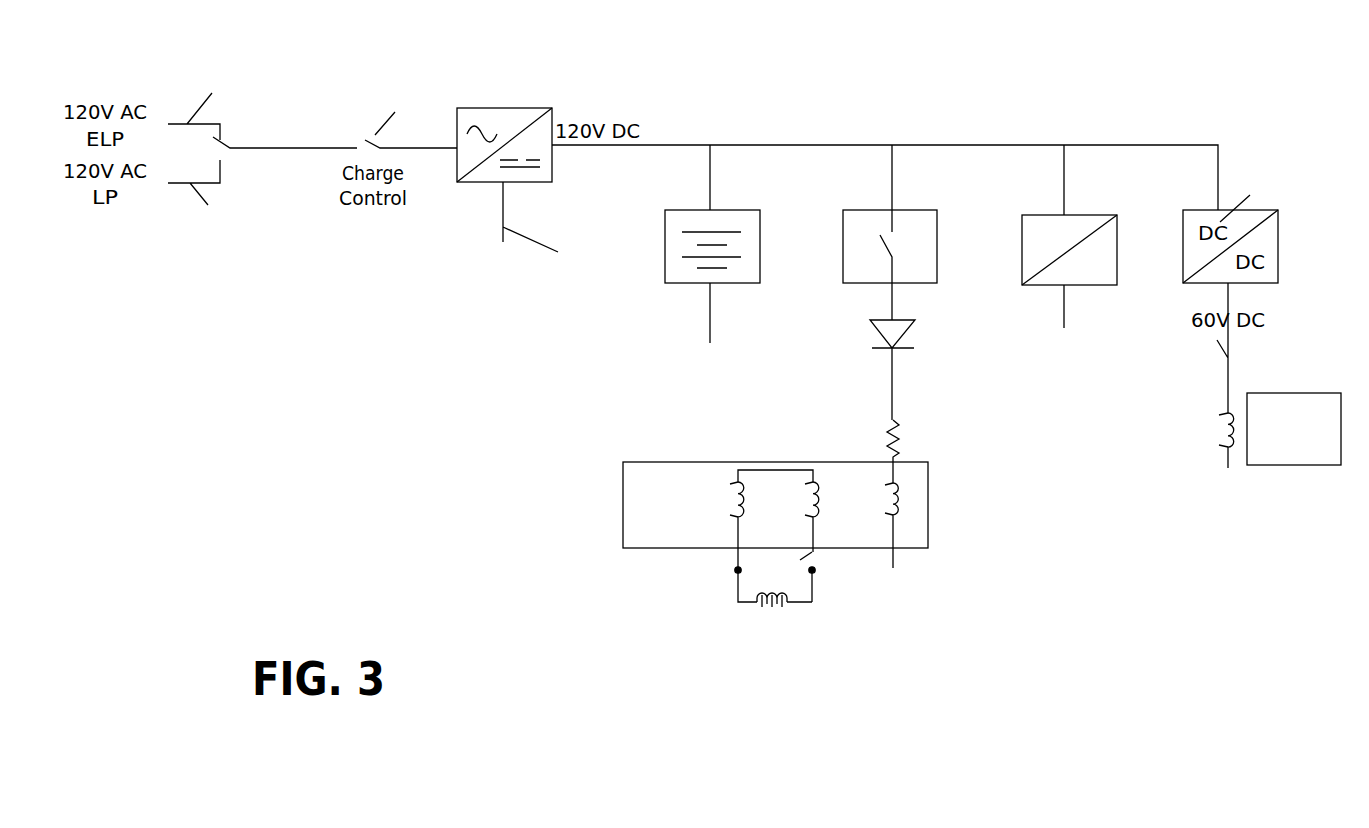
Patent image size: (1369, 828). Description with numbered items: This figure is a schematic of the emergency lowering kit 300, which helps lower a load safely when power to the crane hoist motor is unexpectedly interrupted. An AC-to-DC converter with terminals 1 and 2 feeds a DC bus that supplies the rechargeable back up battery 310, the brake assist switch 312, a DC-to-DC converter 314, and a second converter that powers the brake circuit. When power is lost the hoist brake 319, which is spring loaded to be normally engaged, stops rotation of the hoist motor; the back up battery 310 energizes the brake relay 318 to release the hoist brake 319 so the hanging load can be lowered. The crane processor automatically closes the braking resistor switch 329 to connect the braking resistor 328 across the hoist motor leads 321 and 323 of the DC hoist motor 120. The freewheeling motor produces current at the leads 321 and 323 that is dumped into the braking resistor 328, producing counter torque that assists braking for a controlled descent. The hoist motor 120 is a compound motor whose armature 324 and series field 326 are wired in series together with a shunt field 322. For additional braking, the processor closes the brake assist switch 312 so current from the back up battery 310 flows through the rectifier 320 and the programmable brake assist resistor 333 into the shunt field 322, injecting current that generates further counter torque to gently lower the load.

The emergency lowering kit 300 is at (702, 110).
The terminal 1 is at (527, 227).
The terminal 2 is at (710, 330).
The rechargeable back up battery 310 is at (748, 220).
The brake assist switch 312 is at (915, 227).
The DC/DC converter 314 is at (1068, 225).
The rectifier 320 is at (902, 327).
The brake assist resistor 333 is at (880, 440).
The brake relay 318 is at (1217, 438).
The hoist brake 319 is at (1262, 458).
The DC hoist motor 120 is at (635, 472).
The shunt field 322 is at (908, 495).
The armature coil 324 is at (728, 502).
The series field coil 326 is at (830, 507).
The hoist motor lead 321 is at (733, 572).
The hoist motor lead 323 is at (815, 573).
The braking resistor 328 is at (767, 615).
The braking resistor switch 329 is at (812, 552).